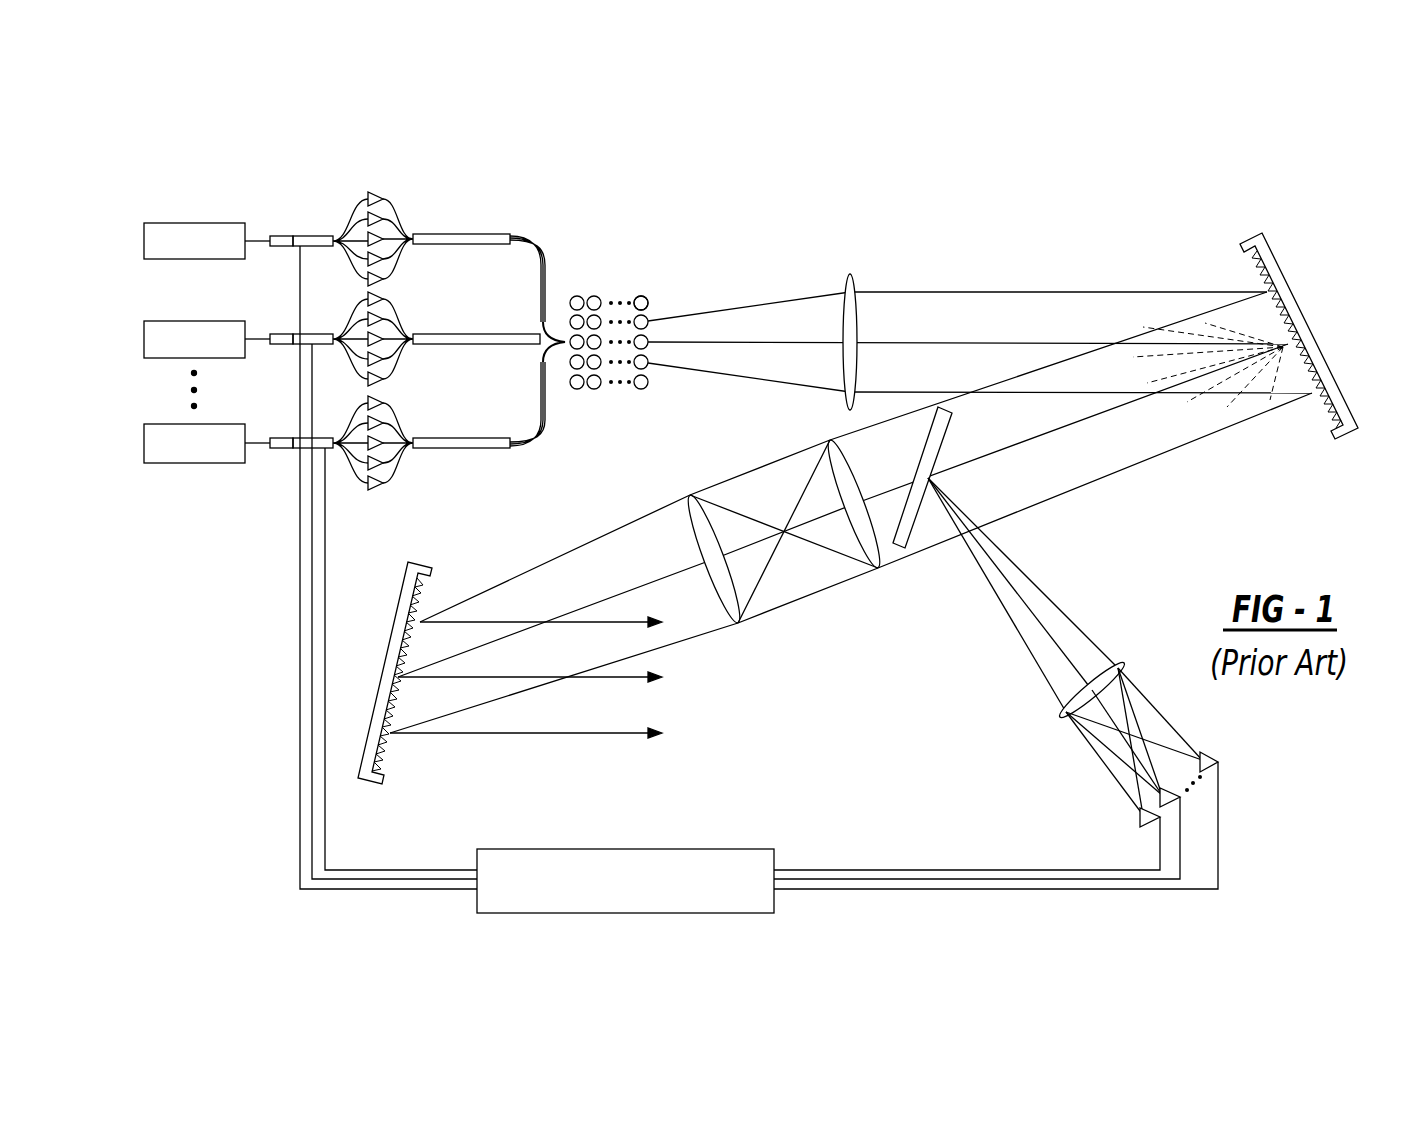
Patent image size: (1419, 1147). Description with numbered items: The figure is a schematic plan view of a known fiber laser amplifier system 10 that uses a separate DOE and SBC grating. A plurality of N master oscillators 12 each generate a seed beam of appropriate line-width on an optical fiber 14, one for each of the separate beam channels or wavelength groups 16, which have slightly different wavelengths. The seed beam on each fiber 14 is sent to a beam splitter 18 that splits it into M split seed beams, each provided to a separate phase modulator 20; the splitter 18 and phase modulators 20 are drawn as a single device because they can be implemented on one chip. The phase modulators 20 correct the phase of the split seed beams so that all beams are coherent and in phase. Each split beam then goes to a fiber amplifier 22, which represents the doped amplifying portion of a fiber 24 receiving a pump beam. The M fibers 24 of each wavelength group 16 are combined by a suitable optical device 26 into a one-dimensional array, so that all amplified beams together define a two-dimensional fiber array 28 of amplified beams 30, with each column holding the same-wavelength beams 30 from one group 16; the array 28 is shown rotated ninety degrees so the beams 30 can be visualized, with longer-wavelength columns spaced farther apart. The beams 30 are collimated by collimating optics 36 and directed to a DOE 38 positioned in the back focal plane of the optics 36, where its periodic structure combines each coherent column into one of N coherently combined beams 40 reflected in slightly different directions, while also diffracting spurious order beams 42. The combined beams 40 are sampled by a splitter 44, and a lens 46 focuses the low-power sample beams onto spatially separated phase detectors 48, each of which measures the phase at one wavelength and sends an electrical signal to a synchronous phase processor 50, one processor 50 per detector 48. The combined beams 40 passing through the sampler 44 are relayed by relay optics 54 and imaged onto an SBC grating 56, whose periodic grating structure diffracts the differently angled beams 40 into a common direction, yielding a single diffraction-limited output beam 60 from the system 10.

The fiber laser amplifier system 10 is at (920, 176).
The master oscillator 12 is at (232, 223).
The optical fiber 14 is at (258, 243).
The wavelength group 16 is at (449, 314).
The beam splitter 18 is at (282, 236).
The phase modulator 20 is at (318, 236).
The fiber amplifier 22 is at (370, 191).
The fiber 24 is at (397, 207).
The optical device 26 is at (437, 246).
The two-dimensional fiber array 28 is at (668, 394).
The amplified beam 30 is at (641, 296).
The collimating optics 36 is at (850, 274).
The DOE 38 is at (1297, 297).
The coherently combined beam 40 is at (1147, 455).
The spurious order beam 42 is at (1153, 330).
The splitter 44 is at (940, 448).
The lens 46 is at (1060, 712).
The phase detector 48 is at (1143, 822).
The synchronous phase processor 50 is at (727, 849).
The relay optics 54 is at (836, 602).
The SBC grating 56 is at (392, 640).
The output beam 60 is at (558, 735).